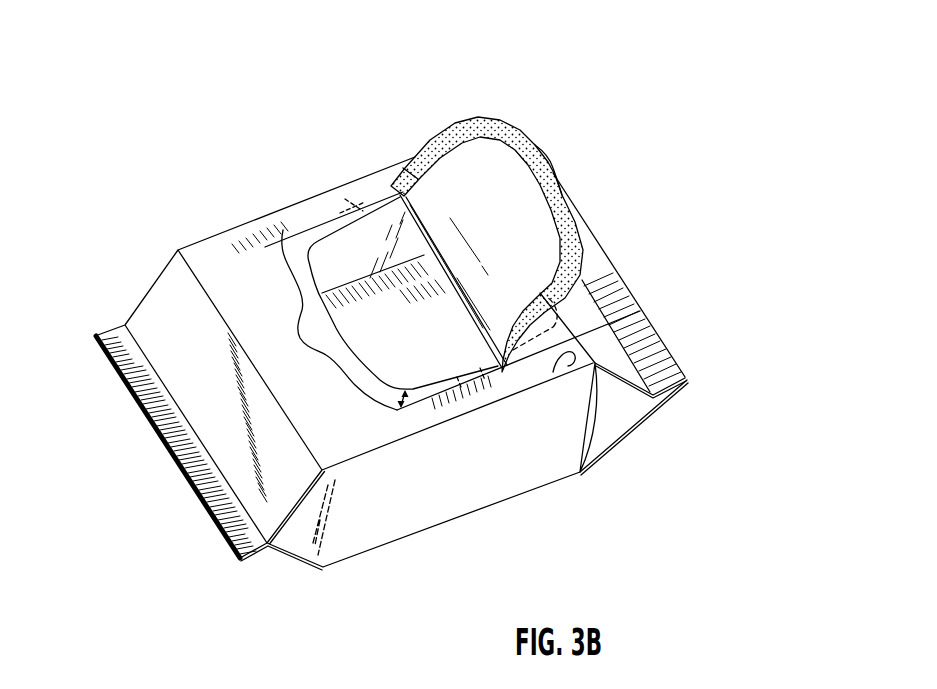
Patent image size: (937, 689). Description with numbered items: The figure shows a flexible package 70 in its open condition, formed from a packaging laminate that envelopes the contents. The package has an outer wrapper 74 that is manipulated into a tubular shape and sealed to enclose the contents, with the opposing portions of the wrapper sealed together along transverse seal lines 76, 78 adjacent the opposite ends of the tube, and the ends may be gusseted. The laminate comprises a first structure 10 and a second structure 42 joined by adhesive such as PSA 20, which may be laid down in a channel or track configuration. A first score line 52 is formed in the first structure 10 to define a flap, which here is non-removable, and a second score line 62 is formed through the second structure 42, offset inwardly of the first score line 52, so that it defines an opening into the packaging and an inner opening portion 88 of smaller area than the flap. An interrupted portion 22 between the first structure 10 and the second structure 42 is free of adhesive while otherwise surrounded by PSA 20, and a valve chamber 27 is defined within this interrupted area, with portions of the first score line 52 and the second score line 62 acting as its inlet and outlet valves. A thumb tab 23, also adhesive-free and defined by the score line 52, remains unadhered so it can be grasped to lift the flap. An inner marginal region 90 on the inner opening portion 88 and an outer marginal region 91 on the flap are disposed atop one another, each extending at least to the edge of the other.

The first structure 10 is at (350, 435).
The PSA 20 is at (458, 122).
The interrupted portion 22 is at (352, 193).
The thumb tab 23 is at (551, 167).
The valve chamber 27 is at (308, 240).
The second structure 42 is at (455, 398).
The first score line 52 is at (328, 237).
The second score line 62 is at (322, 265).
The flexible package 70 is at (135, 182).
The outer wrapper 74 is at (605, 350).
The transverse seal line 76 is at (212, 482).
The transverse seal line 78 is at (600, 268).
The inner opening portion 88 is at (490, 193).
The inner marginal region 90 is at (397, 410).
The outer marginal region 91 is at (537, 305).